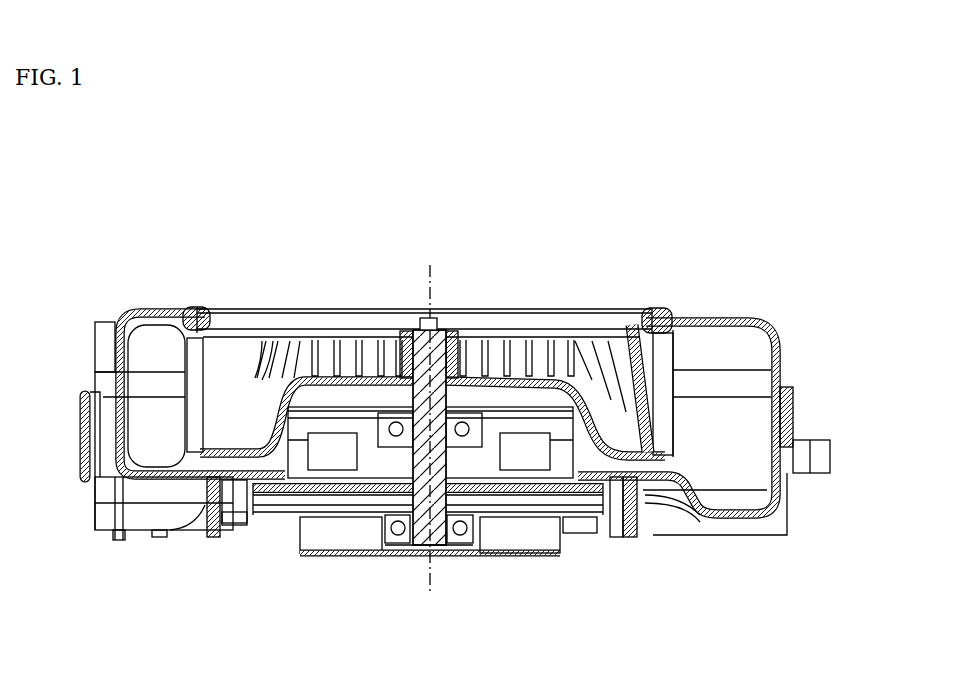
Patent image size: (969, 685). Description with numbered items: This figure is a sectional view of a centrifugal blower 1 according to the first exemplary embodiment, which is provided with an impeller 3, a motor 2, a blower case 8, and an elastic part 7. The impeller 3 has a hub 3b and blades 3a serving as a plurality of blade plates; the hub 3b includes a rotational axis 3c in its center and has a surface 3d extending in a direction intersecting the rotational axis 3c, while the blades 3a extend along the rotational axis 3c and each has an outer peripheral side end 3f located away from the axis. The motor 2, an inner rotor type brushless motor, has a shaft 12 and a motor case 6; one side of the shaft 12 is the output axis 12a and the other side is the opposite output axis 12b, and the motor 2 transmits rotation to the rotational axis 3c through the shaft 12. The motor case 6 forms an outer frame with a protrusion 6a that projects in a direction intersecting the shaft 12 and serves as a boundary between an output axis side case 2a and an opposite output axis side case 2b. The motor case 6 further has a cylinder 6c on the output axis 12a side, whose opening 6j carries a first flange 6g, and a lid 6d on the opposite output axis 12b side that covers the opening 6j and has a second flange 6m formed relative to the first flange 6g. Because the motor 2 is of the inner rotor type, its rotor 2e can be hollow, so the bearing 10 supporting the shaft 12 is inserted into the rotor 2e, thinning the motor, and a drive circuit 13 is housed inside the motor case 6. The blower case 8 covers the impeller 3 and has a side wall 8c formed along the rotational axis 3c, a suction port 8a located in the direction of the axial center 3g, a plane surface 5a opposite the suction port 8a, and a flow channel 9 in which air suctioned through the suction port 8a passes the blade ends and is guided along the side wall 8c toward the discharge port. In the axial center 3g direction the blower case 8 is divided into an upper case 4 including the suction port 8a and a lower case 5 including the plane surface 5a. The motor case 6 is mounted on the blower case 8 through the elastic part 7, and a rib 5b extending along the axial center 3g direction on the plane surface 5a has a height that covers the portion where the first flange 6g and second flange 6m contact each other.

The centrifugal blower 1 is at (135, 542).
The motor 2 is at (193, 481).
The output axis side case 2a is at (283, 452).
The opposite output axis side case 2b is at (232, 522).
The rotor 2e is at (375, 505).
The impeller 3 is at (272, 340).
The blades 3a is at (628, 340).
The hub 3b is at (300, 348).
The rotational axis 3c is at (438, 365).
The surface 3d is at (517, 358).
The outer peripheral side end 3f is at (652, 345).
The axial center 3g is at (452, 354).
The upper case 4 is at (738, 322).
The lower case 5 is at (773, 515).
The plane surface 5a is at (628, 537).
The rib 5b is at (217, 537).
The motor case 6 is at (612, 545).
The protrusion 6a is at (578, 522).
The cylinder 6c is at (513, 405).
The lid 6d is at (333, 535).
The first flange 6g is at (232, 540).
The opening 6j is at (503, 507).
The second flange 6m is at (237, 538).
The elastic part 7 is at (615, 500).
The blower case 8 is at (97, 310).
The suction port 8a is at (372, 318).
The side wall 8c is at (780, 382).
The flow channel 9 is at (151, 310).
The bearing 10 is at (392, 545).
The shaft 12 is at (453, 322).
The output axis 12a is at (412, 330).
The opposite output axis 12b is at (442, 547).
The drive circuit 13 is at (310, 513).